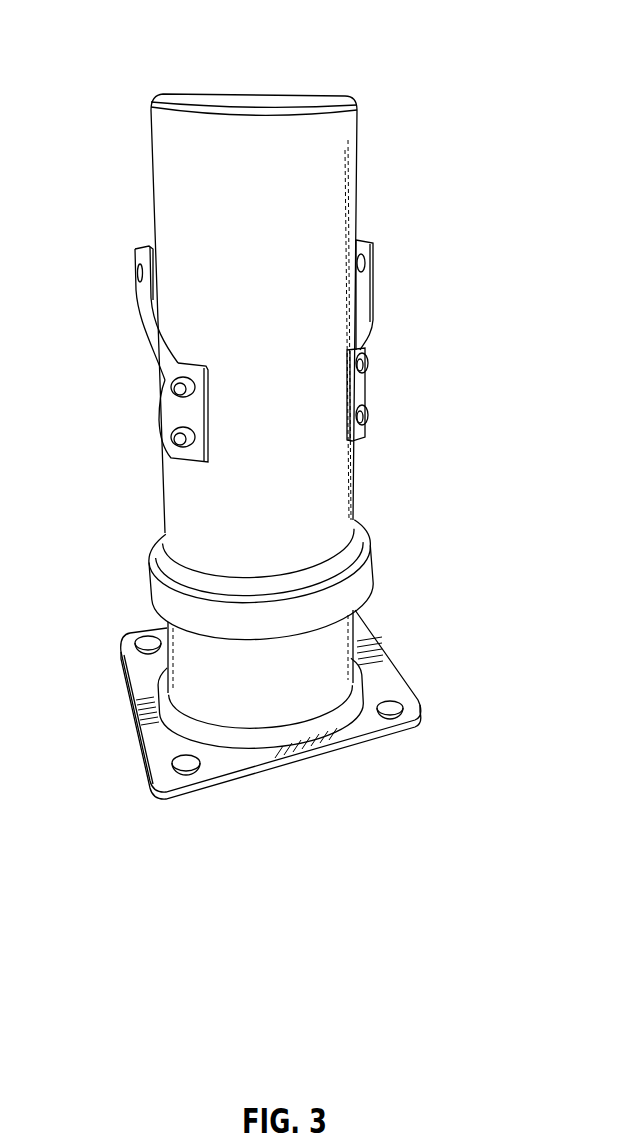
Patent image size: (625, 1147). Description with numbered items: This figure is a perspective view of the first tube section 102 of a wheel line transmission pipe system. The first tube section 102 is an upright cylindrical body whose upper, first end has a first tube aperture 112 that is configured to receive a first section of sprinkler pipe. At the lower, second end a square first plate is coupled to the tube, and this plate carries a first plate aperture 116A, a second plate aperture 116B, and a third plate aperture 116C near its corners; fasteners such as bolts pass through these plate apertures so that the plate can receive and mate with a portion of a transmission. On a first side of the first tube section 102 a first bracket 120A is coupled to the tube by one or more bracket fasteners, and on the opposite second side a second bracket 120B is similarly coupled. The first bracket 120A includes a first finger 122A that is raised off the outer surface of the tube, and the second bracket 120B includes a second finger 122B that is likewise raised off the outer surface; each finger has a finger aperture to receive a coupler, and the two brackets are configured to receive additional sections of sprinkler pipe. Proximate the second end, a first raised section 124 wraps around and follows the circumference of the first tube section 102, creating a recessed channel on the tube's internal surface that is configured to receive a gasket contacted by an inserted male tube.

The first tube section 102 is at (198, 492).
The first tube aperture 112 is at (250, 92).
The first plate aperture 116A is at (145, 643).
The second plate aperture 116B is at (183, 771).
The third plate aperture 116C is at (383, 700).
The first bracket 120A is at (175, 410).
The second bracket 120B is at (349, 404).
The first finger 122A is at (140, 296).
The second finger 122B is at (368, 268).
The first raised section 124 is at (330, 598).